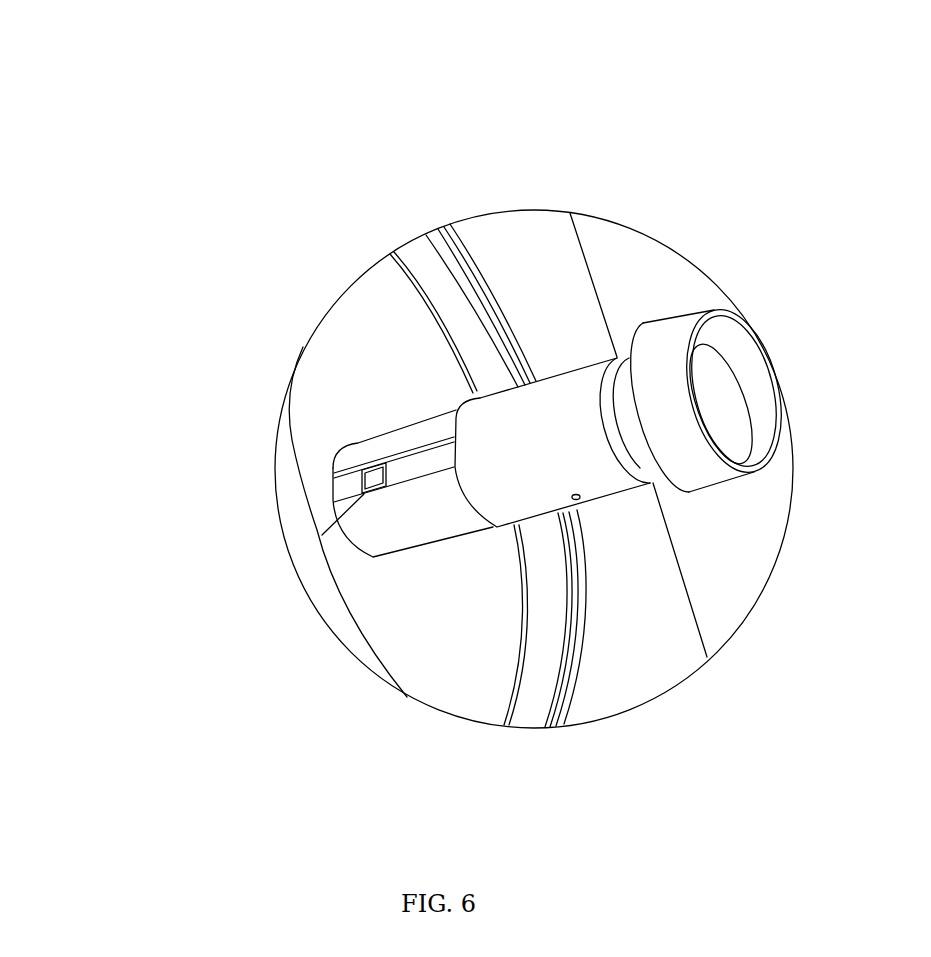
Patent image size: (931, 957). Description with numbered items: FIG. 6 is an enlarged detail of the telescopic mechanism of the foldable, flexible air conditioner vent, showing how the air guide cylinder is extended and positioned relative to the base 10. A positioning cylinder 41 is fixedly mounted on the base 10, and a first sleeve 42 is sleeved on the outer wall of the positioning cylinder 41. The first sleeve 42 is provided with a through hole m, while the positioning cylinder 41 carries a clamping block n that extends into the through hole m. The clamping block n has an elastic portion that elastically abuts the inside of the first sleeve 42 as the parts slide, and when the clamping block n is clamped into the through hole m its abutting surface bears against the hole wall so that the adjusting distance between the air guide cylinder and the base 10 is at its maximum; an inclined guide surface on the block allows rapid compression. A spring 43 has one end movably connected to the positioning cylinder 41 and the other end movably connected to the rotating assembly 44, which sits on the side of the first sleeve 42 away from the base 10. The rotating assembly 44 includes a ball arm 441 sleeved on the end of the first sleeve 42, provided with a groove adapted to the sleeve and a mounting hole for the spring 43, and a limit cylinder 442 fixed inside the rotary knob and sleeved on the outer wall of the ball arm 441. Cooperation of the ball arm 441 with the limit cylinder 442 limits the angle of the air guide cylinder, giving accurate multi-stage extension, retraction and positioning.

The base 10 is at (290, 512).
The positioning cylinder 41 is at (333, 465).
The first sleeve 42 is at (437, 437).
The spring 43 is at (381, 470).
The rotating assembly 44 is at (626, 270).
The ball arm 441 is at (542, 400).
The limit cylinder 442 is at (677, 333).
The through hole m is at (363, 543).
The clamping block n is at (381, 470).